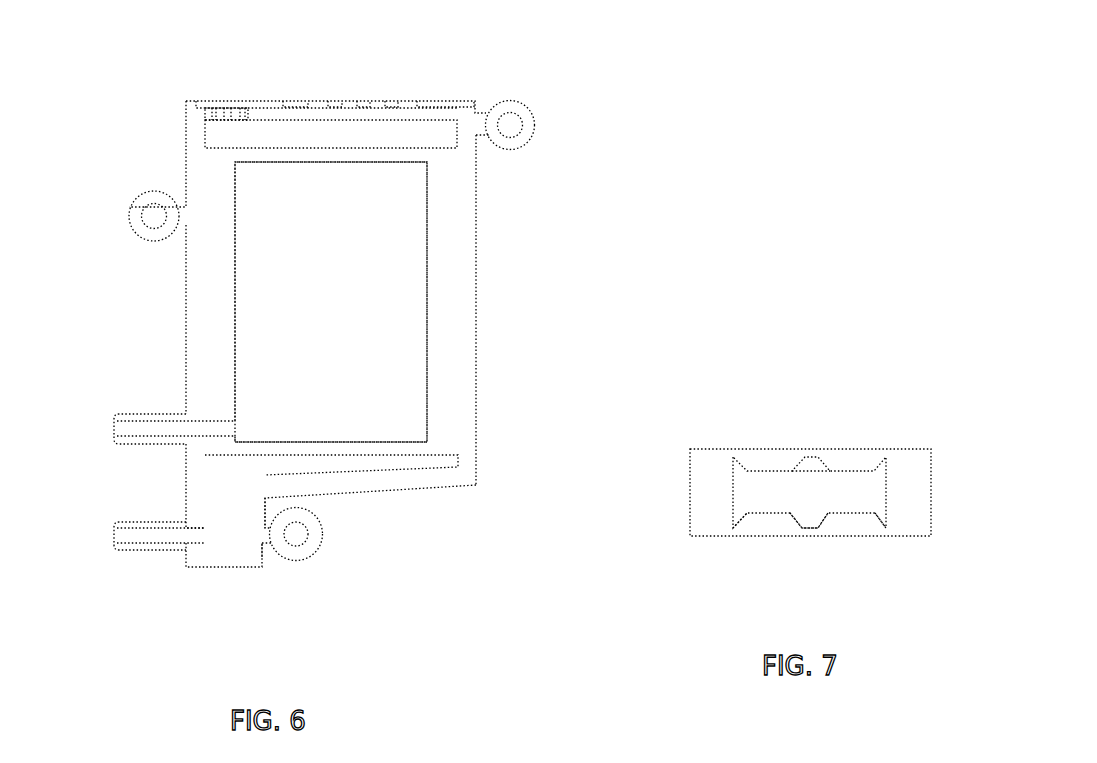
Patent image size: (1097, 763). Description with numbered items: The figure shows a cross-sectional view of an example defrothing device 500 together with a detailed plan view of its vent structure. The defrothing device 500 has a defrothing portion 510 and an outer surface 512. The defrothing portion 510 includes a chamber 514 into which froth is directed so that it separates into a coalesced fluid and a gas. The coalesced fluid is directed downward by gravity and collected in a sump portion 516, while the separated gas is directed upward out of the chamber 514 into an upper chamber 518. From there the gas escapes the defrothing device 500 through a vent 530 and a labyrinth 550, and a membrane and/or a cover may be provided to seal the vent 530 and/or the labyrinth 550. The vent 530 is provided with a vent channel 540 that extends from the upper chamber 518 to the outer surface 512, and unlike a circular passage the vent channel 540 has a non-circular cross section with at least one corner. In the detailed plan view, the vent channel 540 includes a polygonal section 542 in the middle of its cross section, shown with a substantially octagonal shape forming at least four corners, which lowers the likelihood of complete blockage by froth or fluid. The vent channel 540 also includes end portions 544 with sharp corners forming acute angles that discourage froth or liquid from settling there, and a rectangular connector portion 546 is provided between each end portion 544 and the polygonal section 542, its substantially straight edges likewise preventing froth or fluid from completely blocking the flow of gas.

In FIG. 6, the defrothing device 500 is at (368, 326).
In FIG. 6, the defrothing portion 510 is at (324, 334).
In FIG. 6, the outer surface 512 is at (372, 100).
In FIG. 6, the chamber 514 is at (424, 337).
In FIG. 6, the sump portion 516 is at (238, 539).
In FIG. 6, the upper chamber 518 is at (440, 136).
In FIG. 6, the vent 530 is at (263, 100).
In FIG. 7, the vent 530 is at (896, 434).
In FIG. 6, the vent channel 540 is at (212, 112).
In FIG. 7, the vent channel 540 is at (759, 450).
In FIG. 7, the polygonal section 542 is at (808, 470).
In FIG. 7, the end portions 544 is at (725, 545).
In FIG. 7, the rectangular connector portion 546 is at (841, 530).
In FIG. 6, the labyrinth 550 is at (456, 100).